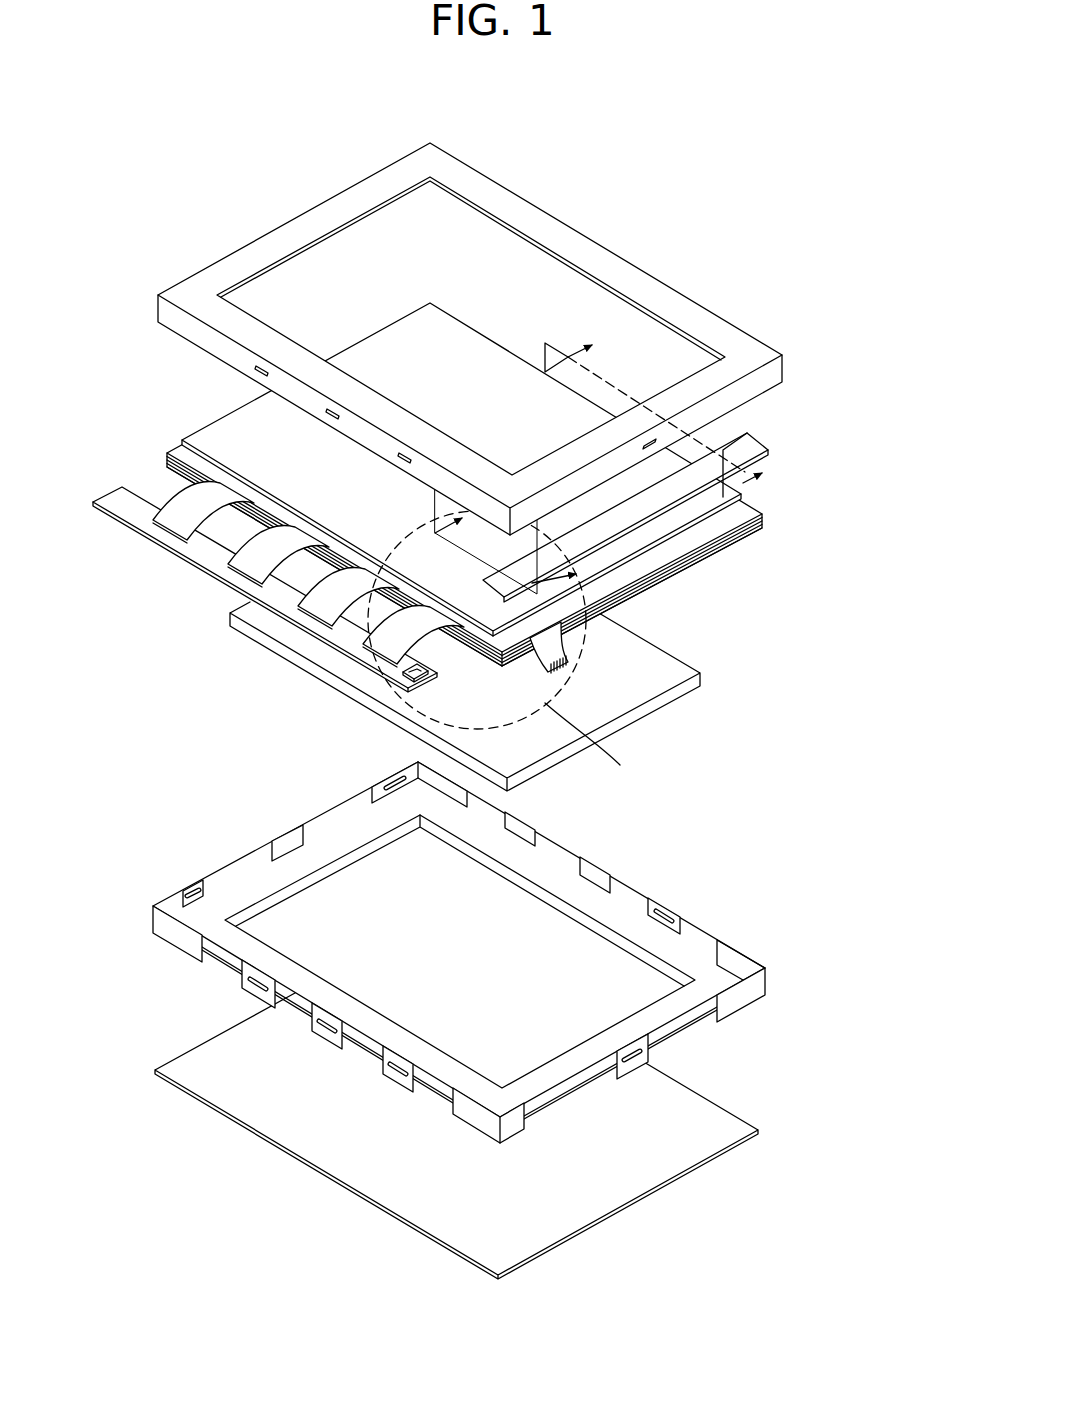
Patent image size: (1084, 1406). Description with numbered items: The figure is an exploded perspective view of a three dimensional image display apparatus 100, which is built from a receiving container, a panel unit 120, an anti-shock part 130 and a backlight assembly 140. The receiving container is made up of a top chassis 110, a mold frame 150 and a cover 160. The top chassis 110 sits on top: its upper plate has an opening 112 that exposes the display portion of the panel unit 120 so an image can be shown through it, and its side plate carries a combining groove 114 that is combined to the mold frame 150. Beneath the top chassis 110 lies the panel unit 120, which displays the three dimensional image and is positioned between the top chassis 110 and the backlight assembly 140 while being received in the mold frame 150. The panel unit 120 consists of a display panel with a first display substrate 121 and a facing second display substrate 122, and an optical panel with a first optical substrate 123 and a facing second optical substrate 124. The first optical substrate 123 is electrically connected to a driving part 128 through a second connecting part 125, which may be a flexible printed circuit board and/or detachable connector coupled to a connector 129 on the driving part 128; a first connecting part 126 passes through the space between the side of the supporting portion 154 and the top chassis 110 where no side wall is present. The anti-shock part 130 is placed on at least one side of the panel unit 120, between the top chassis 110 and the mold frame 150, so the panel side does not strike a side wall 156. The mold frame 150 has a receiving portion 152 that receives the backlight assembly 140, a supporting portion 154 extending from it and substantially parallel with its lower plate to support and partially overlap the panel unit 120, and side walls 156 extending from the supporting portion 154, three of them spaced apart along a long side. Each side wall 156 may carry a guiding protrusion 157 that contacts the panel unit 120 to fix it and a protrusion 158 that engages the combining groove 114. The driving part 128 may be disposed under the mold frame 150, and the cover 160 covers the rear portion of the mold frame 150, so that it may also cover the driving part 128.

The three dimensional image display apparatus 100 is at (566, 142).
The top chassis 110 is at (425, 339).
The opening 112 is at (530, 285).
The combining groove 114 is at (258, 370).
The panel unit 120 is at (447, 513).
The first display substrate 121 is at (715, 548).
The second display substrate 122 is at (753, 527).
The first optical substrate 123 is at (648, 582).
The second optical substrate 124 is at (680, 560).
The second connecting part 125 is at (560, 648).
The first connecting part 126 is at (180, 525).
The driving part 128 is at (218, 558).
The connector 129 is at (420, 683).
The anti-shock part 130 is at (786, 447).
The backlight assembly 140 is at (703, 672).
The mold frame 150 is at (411, 952).
The receiving portion 152 is at (363, 848).
The supporting portion 154 is at (228, 945).
The side wall 156 is at (330, 1040).
The guiding protrusion 157 is at (655, 893).
The protrusion 158 is at (323, 1022).
The cover 160 is at (678, 1152).